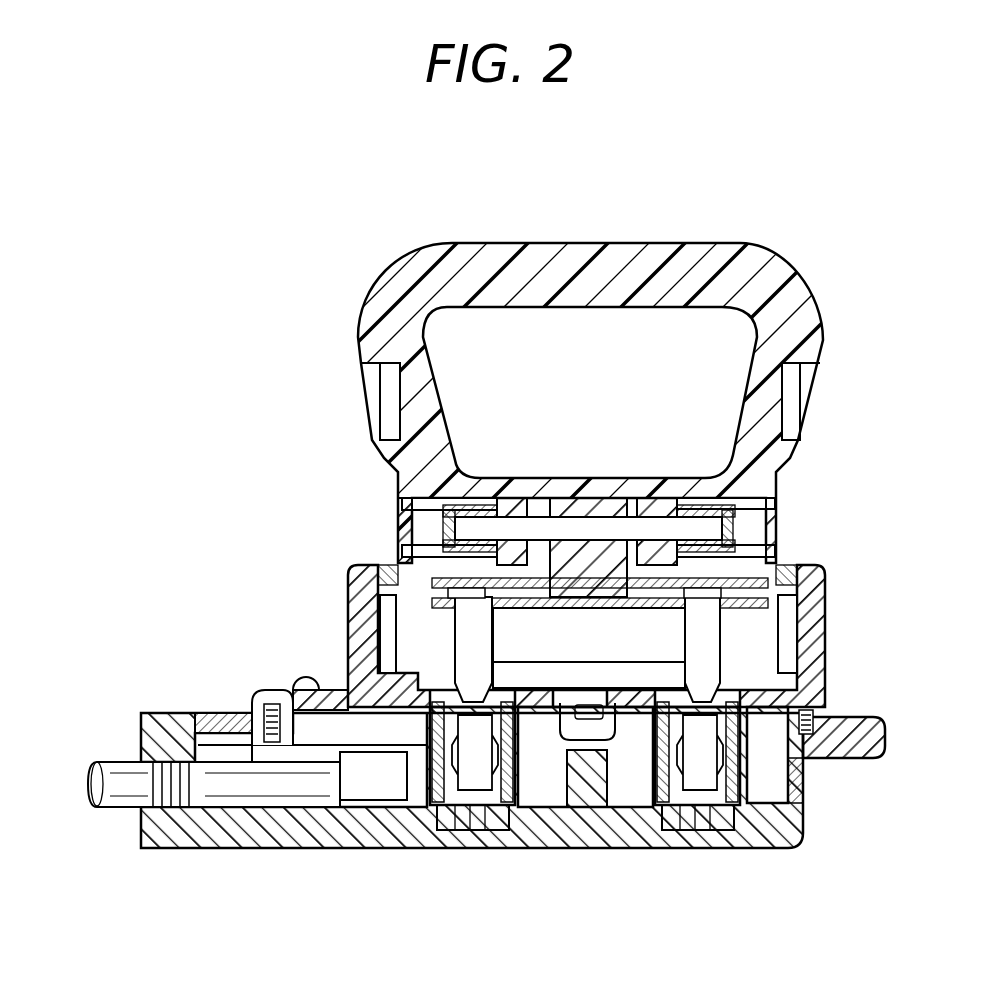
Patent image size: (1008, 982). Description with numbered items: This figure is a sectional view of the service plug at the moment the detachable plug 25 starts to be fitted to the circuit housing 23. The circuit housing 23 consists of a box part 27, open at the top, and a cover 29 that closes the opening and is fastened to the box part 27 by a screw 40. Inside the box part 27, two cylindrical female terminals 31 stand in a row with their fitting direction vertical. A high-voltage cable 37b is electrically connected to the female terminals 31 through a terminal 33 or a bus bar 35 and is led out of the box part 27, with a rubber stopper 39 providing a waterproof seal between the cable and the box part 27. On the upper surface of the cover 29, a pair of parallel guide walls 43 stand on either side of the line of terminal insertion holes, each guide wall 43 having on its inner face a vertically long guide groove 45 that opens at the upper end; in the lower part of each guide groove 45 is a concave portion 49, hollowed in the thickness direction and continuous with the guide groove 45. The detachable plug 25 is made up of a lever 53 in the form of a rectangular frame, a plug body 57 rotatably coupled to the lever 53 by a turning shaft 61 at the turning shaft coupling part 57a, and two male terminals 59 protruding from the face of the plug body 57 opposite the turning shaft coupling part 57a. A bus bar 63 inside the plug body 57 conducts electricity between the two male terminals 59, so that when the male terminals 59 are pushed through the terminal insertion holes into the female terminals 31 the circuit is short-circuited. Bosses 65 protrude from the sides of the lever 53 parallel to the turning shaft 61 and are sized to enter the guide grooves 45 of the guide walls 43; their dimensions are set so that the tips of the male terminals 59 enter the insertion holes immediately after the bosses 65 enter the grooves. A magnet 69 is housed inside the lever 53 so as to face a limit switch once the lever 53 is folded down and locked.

The circuit housing 23 is at (762, 884).
The detachable plug 25 is at (733, 226).
The box part 27 is at (290, 848).
The cover 29 is at (262, 695).
The female terminal 31 is at (475, 790).
The terminal 33 is at (378, 790).
The bus bar 35 is at (760, 795).
The high-voltage cable 37b is at (100, 806).
The rubber stopper 39 is at (165, 733).
The screw 40 is at (302, 682).
The guide wall 43 is at (348, 575).
The guide groove 45 is at (790, 605).
The concave portion 49 is at (778, 645).
The lever 53 is at (450, 262).
The plug body 57 is at (733, 583).
The turning shaft coupling part 57a is at (588, 497).
The male terminal 59 is at (490, 650).
The turning shaft 61 is at (652, 524).
The bus bar 63 is at (518, 590).
The boss 65 is at (398, 560).
The magnet 69 is at (806, 418).